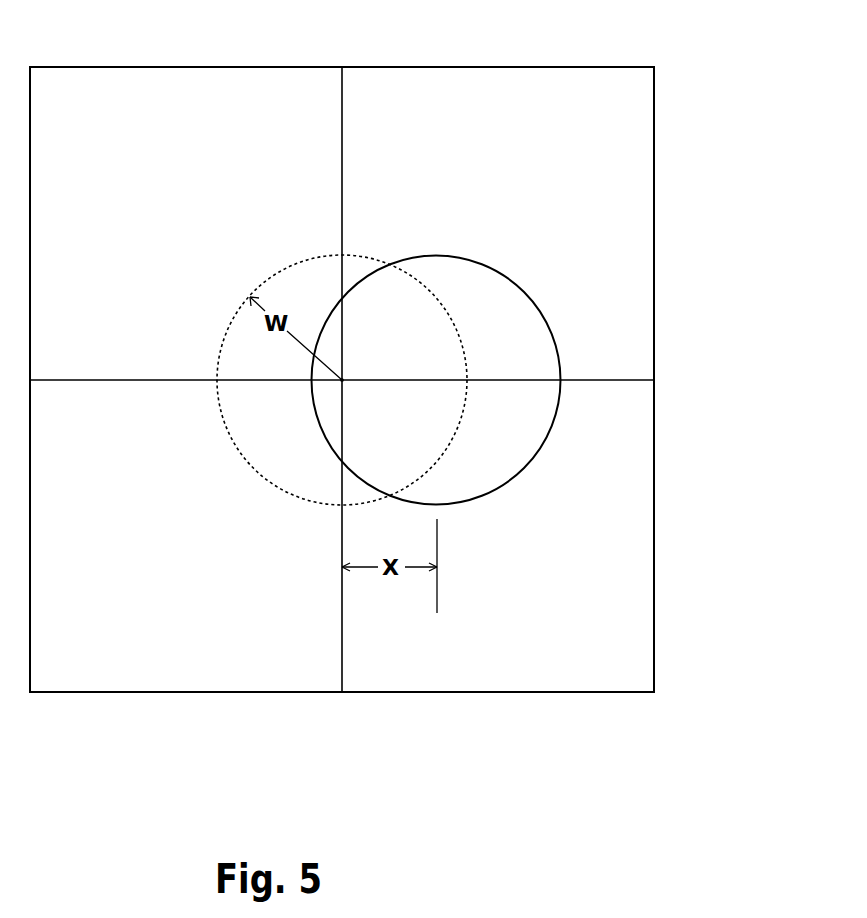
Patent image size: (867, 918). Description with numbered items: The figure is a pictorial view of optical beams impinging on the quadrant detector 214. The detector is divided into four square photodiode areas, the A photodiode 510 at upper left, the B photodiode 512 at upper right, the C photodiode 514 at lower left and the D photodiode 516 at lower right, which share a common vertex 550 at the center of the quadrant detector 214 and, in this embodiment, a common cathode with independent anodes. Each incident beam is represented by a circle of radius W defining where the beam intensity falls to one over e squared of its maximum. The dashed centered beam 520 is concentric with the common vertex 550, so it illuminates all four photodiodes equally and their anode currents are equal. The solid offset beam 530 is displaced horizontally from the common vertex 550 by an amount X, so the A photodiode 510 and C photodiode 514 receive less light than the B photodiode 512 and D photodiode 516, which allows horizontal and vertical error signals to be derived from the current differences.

The quadrant detector 214 is at (654, 202).
The A photodiode 510 is at (150, 67).
The B photodiode 512 is at (532, 67).
The C photodiode 514 is at (155, 693).
The D photodiode 516 is at (530, 693).
The centered beam 520 is at (247, 458).
The offset beam 530 is at (520, 473).
The common vertex 550 is at (342, 380).